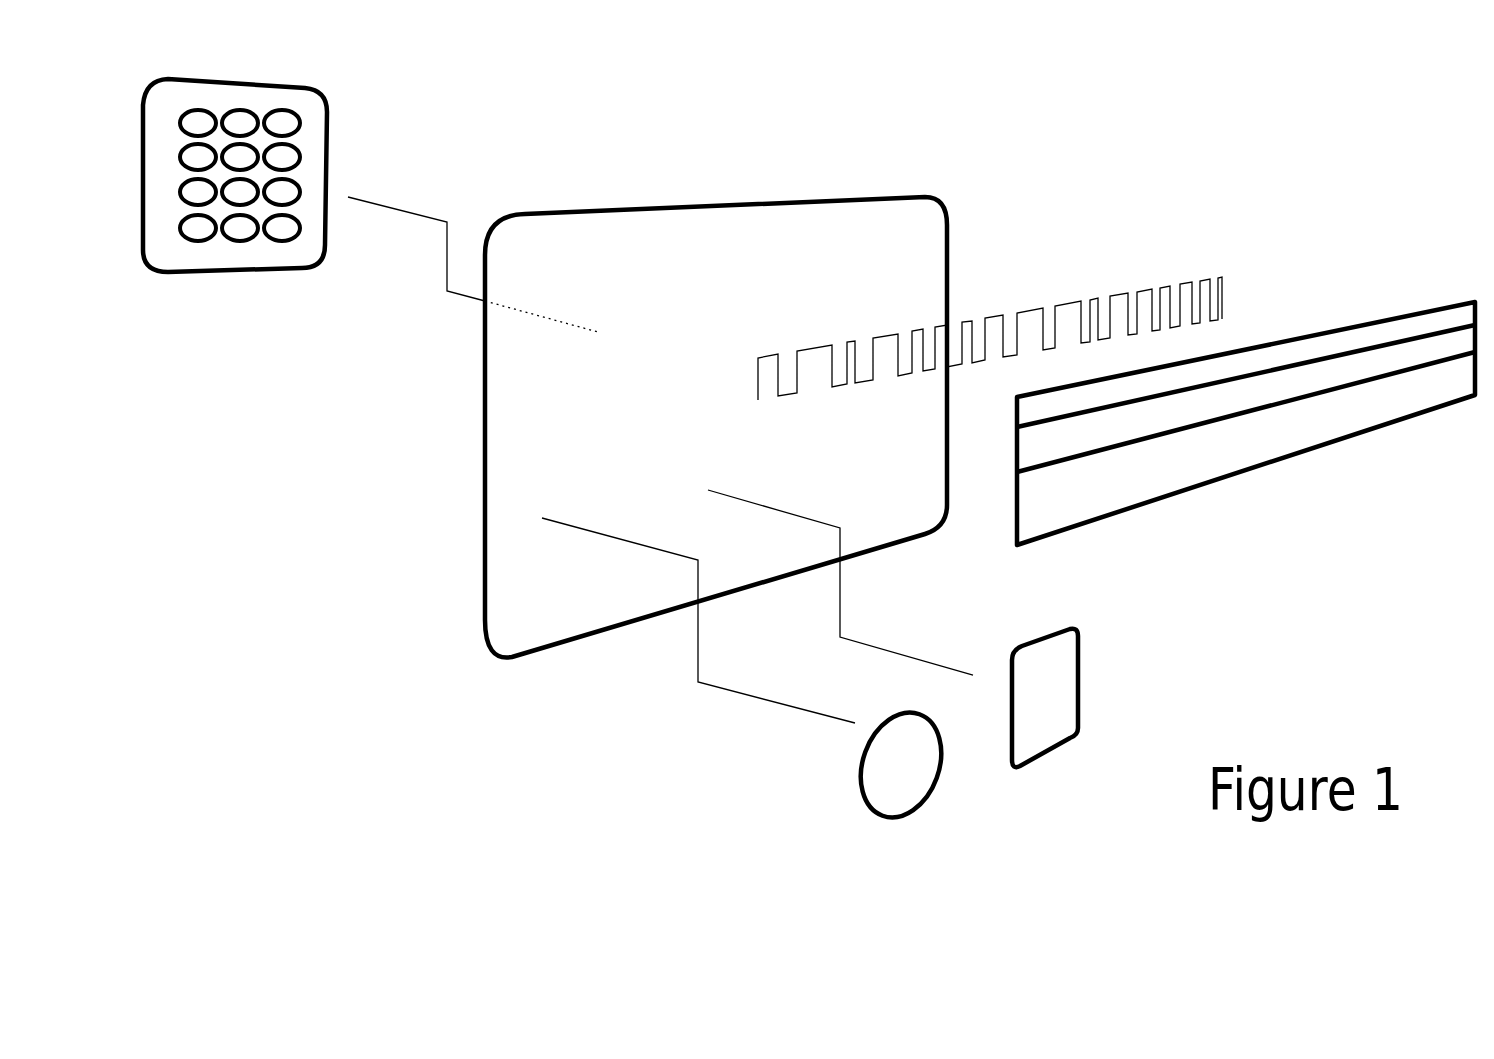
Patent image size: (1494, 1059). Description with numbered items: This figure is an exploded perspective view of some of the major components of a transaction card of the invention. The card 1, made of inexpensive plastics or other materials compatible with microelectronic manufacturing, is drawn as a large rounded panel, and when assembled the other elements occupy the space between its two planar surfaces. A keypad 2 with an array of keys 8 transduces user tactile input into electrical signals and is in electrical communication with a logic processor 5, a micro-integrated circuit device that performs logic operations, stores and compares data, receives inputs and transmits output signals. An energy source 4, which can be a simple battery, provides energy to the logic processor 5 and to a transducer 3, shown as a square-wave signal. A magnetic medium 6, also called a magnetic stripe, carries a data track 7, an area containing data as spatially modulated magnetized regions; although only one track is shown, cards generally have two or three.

The card 1 is at (797, 220).
The keypad 2 is at (310, 107).
The transducer 3 is at (1128, 297).
The energy source 4 is at (912, 793).
The logic processor 5 is at (1065, 727).
The magnetic medium 6 is at (1303, 442).
The data track 7 is at (1373, 363).
The keys 8 is at (198, 227).